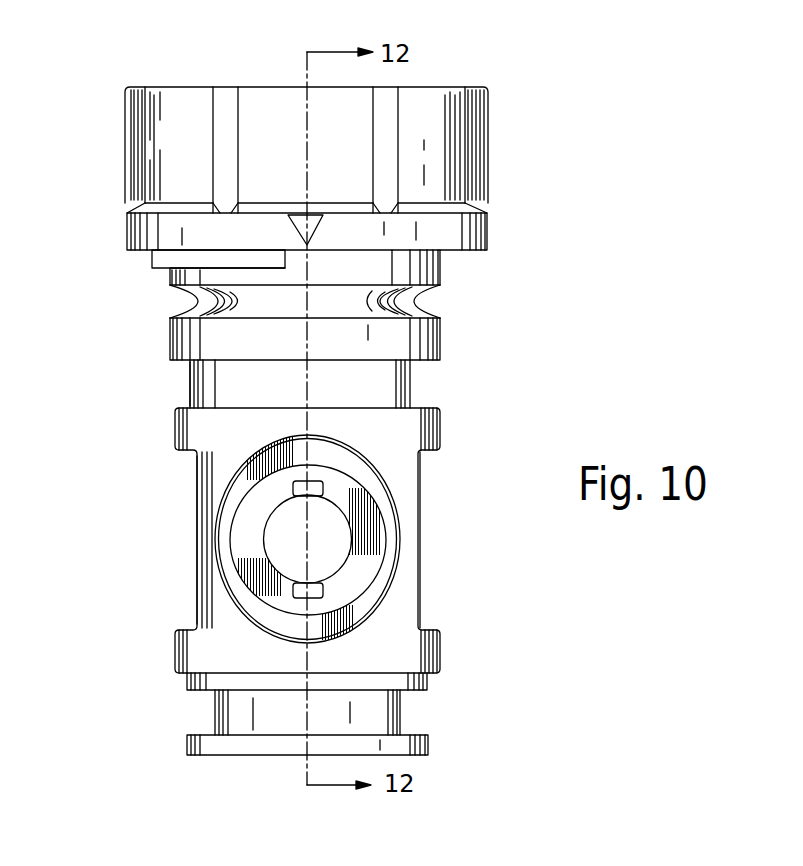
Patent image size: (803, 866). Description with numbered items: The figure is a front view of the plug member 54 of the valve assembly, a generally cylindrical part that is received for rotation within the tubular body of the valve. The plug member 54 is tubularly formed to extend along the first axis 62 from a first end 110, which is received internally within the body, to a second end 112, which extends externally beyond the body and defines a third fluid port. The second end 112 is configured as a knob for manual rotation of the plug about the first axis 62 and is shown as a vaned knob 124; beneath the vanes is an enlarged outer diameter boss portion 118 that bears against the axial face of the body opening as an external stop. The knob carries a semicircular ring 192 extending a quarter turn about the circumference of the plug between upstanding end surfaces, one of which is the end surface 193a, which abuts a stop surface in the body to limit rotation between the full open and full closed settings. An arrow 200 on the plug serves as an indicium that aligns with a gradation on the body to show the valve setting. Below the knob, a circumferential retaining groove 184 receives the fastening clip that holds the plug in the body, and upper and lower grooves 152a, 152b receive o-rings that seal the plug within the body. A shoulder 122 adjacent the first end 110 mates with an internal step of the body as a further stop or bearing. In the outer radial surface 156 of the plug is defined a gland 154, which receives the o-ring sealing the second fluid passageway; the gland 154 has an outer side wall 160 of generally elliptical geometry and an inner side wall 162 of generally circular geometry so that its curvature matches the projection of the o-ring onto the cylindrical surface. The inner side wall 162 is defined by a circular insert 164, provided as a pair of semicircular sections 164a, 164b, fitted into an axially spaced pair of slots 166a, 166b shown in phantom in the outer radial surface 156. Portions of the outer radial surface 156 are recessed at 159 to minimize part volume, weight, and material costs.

The plug member 54 is at (628, 84).
The second end 112 is at (436, 87).
The vaned knob 124 is at (125, 110).
The boss portion 118 is at (127, 236).
The arrow 200 is at (323, 222).
The semicircular ring 192 is at (152, 258).
The end surface 193a is at (285, 262).
The retaining groove 184 is at (415, 292).
The first axis 62 is at (308, 384).
The upper groove 152a is at (190, 385).
The outer radial surface 156 is at (393, 622).
The outer side wall 160 is at (330, 440).
The recess 159 is at (195, 598).
The gland 154 is at (390, 490).
The inner side wall 162 is at (257, 481).
The circular insert 164 is at (358, 541).
The first semicircular section 164a is at (247, 533).
The second semicircular section 164b is at (358, 568).
The first slot 166a is at (292, 496).
The second slot 166b is at (293, 590).
The lower groove 152b is at (425, 702).
The shoulder 122 is at (203, 692).
The first end 110 is at (420, 754).